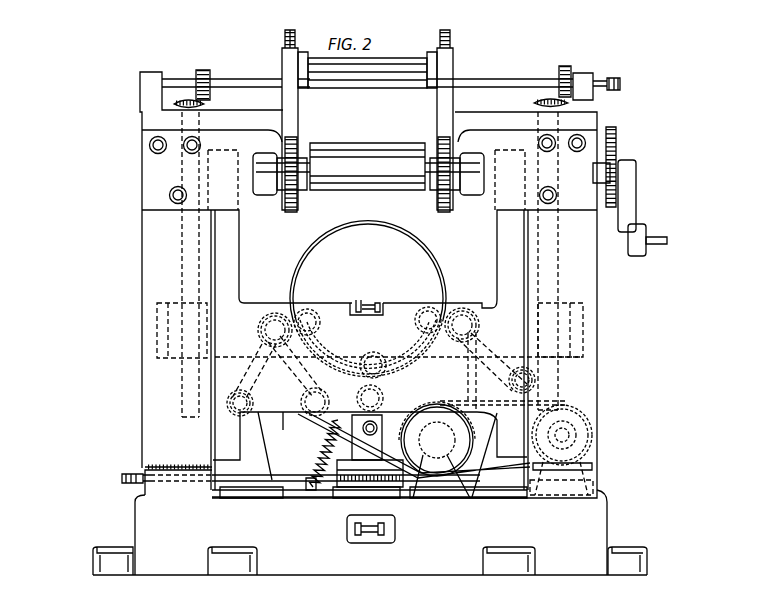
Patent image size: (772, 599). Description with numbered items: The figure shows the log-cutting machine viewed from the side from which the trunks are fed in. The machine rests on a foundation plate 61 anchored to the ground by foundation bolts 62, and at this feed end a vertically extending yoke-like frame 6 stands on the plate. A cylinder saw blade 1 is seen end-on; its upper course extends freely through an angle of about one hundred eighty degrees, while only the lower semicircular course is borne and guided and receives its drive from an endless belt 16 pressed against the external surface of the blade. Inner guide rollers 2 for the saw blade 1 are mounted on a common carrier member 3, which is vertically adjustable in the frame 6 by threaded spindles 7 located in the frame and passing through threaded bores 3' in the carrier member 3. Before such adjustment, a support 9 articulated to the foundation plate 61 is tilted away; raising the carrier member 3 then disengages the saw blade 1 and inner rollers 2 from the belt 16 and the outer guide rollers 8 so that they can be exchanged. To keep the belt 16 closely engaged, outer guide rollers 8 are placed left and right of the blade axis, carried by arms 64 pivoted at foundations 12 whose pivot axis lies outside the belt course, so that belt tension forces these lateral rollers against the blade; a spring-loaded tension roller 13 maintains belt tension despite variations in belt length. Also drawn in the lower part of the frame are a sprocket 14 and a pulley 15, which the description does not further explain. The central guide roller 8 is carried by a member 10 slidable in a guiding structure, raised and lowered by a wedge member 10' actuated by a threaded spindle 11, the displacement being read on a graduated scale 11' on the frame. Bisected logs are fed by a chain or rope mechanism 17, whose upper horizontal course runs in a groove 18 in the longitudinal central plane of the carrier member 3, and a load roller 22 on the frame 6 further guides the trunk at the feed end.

The cylinder saw blade 1 is at (422, 241).
The inner guide rollers 2 is at (305, 309).
The carrier member 3 is at (397, 350).
The threaded bores 3' is at (365, 331).
The frame 6 is at (155, 270).
The threaded spindles 7 is at (204, 107).
The outer guide rollers 8 is at (275, 313).
The support 9 is at (367, 537).
The member carrying central guide roller 10 is at (366, 451).
The wedge member 10' is at (356, 466).
The threaded spindle 11 is at (311, 470).
The graduated scale 11' is at (127, 463).
The foundations 12 is at (258, 429).
The tension roller 13 is at (312, 393).
The sprocket 14 is at (572, 410).
The pulley 15 is at (430, 403).
The endless belt 16 is at (475, 372).
The chain or rope mechanism 17 is at (360, 300).
The groove 18 is at (380, 305).
The load roller 22 is at (365, 149).
The foundation plate 61 is at (447, 542).
The foundation bolts 62 is at (95, 555).
The arms 64 is at (255, 362).